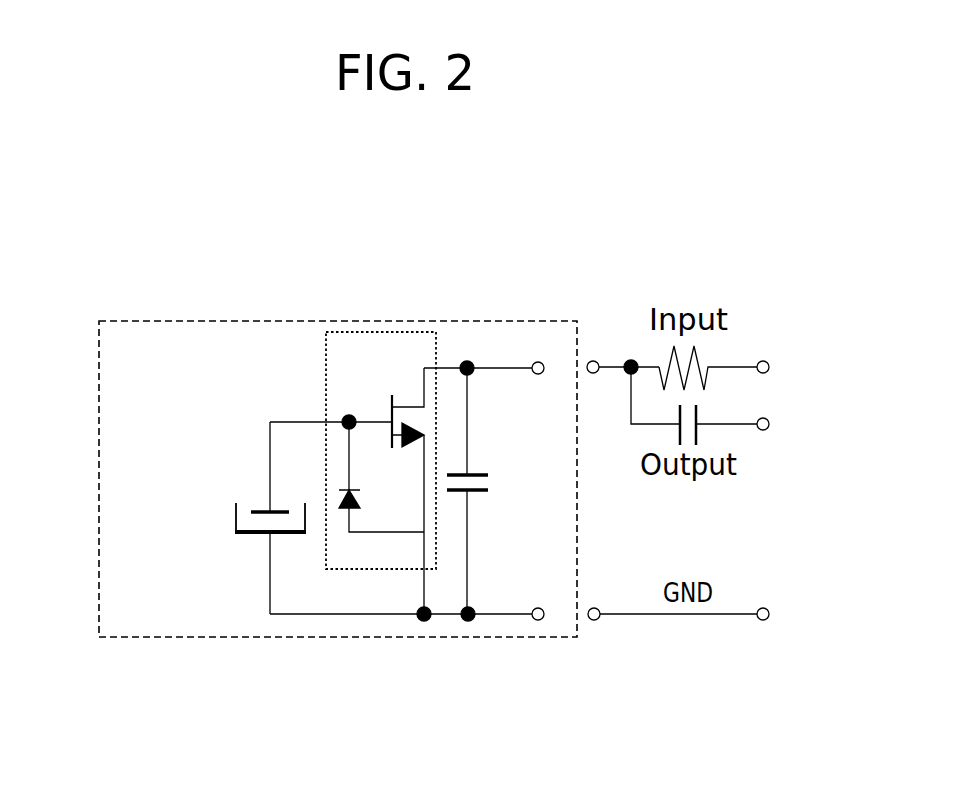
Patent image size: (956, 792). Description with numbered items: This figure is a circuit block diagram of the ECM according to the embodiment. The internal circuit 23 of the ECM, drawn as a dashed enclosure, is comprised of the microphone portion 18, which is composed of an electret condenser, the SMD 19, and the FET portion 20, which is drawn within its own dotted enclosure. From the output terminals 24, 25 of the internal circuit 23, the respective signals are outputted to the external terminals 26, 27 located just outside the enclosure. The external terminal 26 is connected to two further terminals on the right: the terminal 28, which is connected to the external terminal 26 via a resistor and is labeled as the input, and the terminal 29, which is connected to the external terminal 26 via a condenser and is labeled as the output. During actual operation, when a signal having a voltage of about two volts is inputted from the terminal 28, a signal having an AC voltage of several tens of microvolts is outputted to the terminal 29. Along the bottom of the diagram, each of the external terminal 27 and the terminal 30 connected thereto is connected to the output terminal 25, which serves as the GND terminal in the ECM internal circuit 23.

The microphone portion 18 is at (236, 516).
The SMD 19 is at (479, 492).
The FET portion 20 is at (326, 366).
The internal circuit 23 is at (99, 545).
The output terminal 24 is at (538, 361).
The output terminal 25 is at (538, 620).
The external terminal 26 is at (594, 361).
The external terminal 27 is at (594, 620).
The terminal 28 is at (769, 367).
The terminal 29 is at (769, 424).
The terminal 30 is at (769, 614).